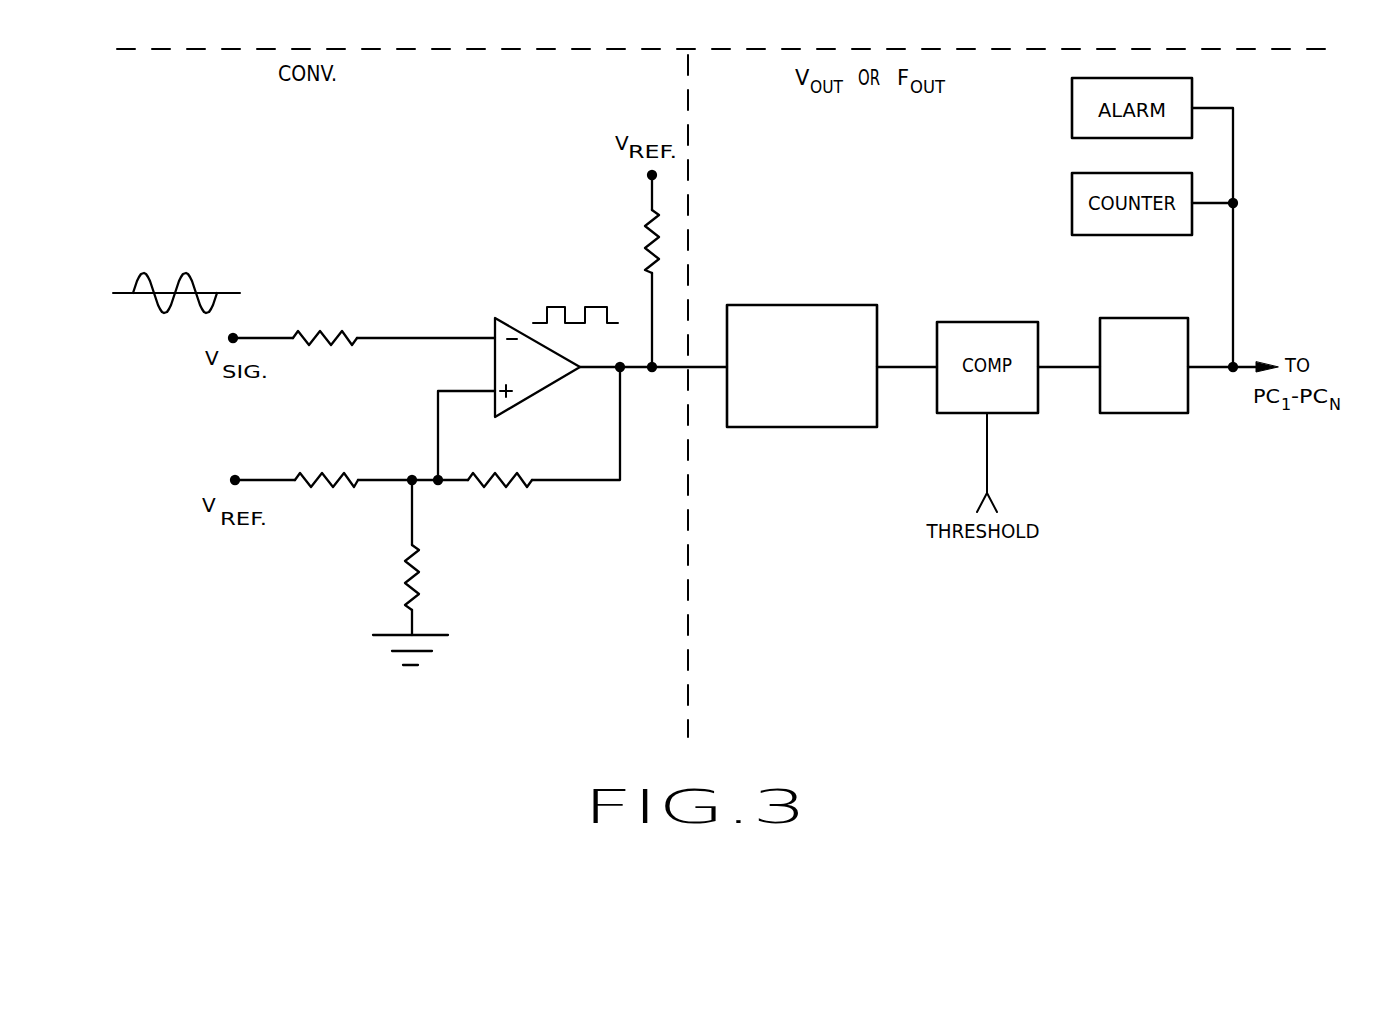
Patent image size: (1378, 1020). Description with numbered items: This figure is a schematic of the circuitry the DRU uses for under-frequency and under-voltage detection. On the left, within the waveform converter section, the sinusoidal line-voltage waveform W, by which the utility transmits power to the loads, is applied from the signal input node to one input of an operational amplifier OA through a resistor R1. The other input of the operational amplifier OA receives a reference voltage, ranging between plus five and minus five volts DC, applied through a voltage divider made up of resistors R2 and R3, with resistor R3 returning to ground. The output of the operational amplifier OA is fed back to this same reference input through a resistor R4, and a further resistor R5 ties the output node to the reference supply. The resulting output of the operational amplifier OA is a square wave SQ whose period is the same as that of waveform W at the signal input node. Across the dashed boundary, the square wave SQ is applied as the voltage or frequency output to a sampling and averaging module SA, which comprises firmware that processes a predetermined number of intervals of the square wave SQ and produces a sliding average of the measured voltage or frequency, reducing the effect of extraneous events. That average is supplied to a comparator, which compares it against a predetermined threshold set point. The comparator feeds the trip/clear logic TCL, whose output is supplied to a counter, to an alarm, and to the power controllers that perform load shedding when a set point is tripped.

The waveform W is at (143, 273).
The resistor R1 is at (320, 333).
The resistor R2 is at (320, 473).
The resistor R3 is at (403, 583).
The resistor R4 is at (507, 488).
The pull-up resistor R5 is at (645, 247).
The operational amplifier OA is at (537, 367).
The square wave SQ is at (558, 307).
The sampling and averaging module SA is at (778, 305).
The trip/clear logic TCL is at (1143, 318).